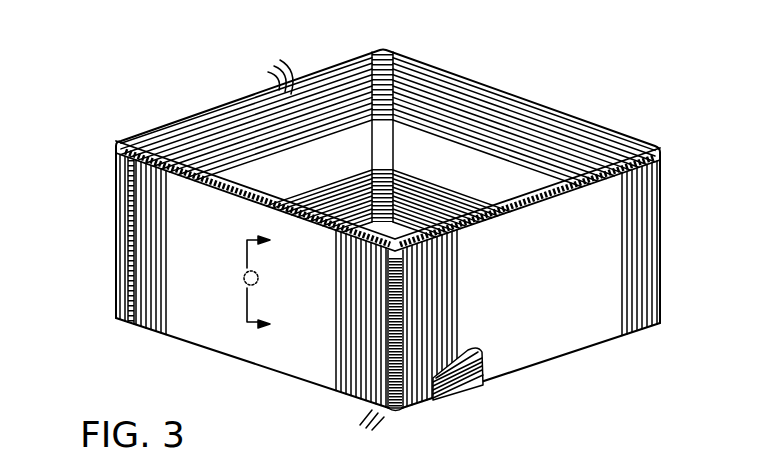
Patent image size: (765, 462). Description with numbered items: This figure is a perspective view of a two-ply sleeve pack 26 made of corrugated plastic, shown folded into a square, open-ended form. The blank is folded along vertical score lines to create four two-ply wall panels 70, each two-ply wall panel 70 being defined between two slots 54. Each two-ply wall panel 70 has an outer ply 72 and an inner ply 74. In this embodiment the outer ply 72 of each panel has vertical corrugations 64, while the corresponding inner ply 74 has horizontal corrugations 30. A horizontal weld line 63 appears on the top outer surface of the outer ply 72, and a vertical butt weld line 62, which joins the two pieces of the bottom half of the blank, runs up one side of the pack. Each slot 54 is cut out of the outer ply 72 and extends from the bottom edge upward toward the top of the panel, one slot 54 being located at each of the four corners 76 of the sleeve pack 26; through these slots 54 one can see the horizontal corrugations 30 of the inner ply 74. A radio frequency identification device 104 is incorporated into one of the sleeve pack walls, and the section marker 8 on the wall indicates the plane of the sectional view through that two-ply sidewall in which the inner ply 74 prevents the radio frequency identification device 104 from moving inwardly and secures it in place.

The two-ply sleeve pack 26 is at (92, 334).
The horizontal corrugations 30 is at (311, 252).
The slot 54 is at (398, 413).
The vertical butt weld line 62 is at (128, 258).
The horizontal weld line 63 is at (585, 192).
The vertical corrugations 64 is at (338, 363).
The two-ply wall panel 70 is at (204, 112).
The outer ply 72 is at (217, 286).
The inner ply 74 is at (312, 176).
The corner 76 is at (386, 50).
The radio frequency identification device 104 is at (262, 286).
The section line 8- 8 is at (242, 282).